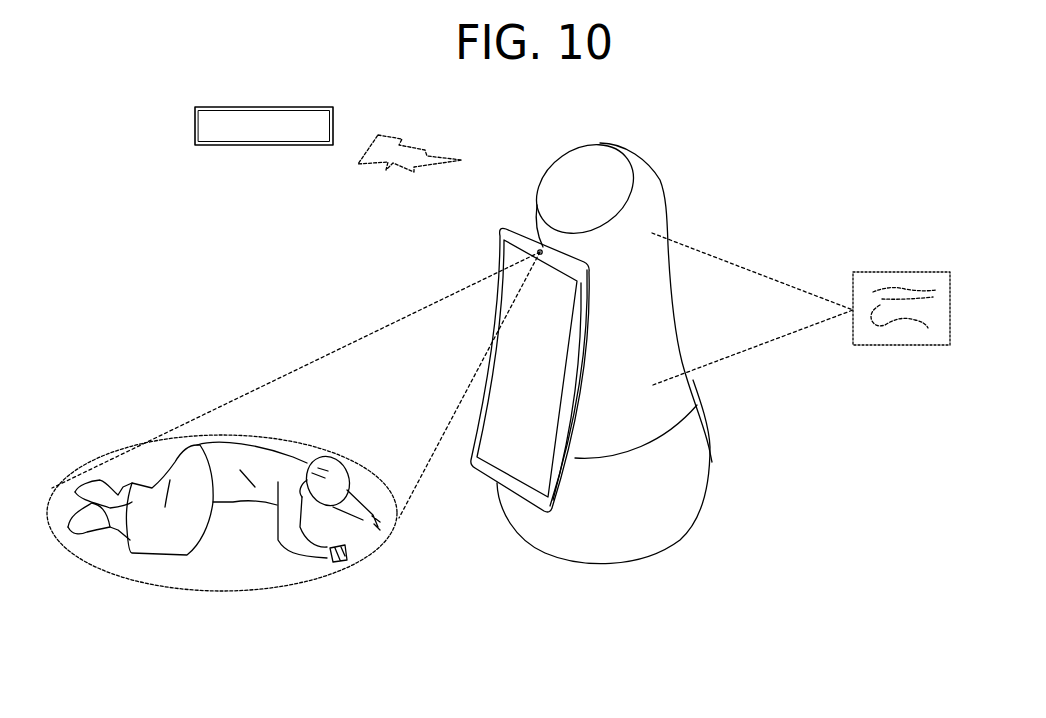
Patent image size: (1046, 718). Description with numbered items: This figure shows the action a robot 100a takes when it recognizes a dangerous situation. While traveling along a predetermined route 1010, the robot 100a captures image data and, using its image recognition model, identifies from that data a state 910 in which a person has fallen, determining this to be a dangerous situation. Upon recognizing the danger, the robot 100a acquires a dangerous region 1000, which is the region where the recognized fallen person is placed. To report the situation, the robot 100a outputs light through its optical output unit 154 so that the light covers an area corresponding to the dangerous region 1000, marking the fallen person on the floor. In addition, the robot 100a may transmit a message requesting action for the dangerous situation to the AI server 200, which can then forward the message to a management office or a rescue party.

The robot 100a is at (619, 146).
The optical output unit 154 is at (528, 236).
The AI server 200 is at (264, 126).
The state in which a person has fallen 910 is at (220, 452).
The dangerous region 1000 is at (244, 573).
The predetermined route 1010 is at (903, 272).